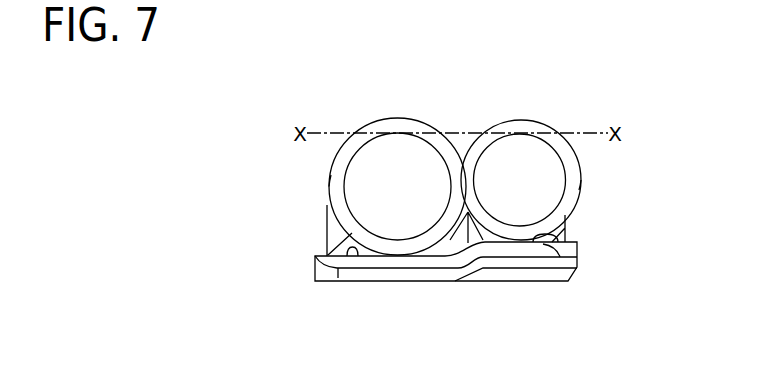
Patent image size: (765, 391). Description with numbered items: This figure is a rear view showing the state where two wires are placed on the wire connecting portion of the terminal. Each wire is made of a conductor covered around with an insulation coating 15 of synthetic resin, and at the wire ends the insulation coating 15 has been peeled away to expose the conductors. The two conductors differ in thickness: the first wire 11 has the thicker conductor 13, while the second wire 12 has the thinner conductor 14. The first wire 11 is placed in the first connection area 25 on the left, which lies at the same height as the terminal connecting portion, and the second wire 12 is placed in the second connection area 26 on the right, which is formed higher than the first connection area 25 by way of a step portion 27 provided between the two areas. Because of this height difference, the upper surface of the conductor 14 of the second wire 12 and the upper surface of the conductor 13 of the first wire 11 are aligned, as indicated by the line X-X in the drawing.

The first wire 11 is at (397, 118).
The second wire 12 is at (517, 119).
The conductor 13 is at (365, 168).
The conductor 14 is at (547, 197).
The insulation coating 15 is at (332, 190).
The first connection area 25 is at (350, 258).
The second connection area 26 is at (542, 242).
The step portion 27 is at (447, 248).